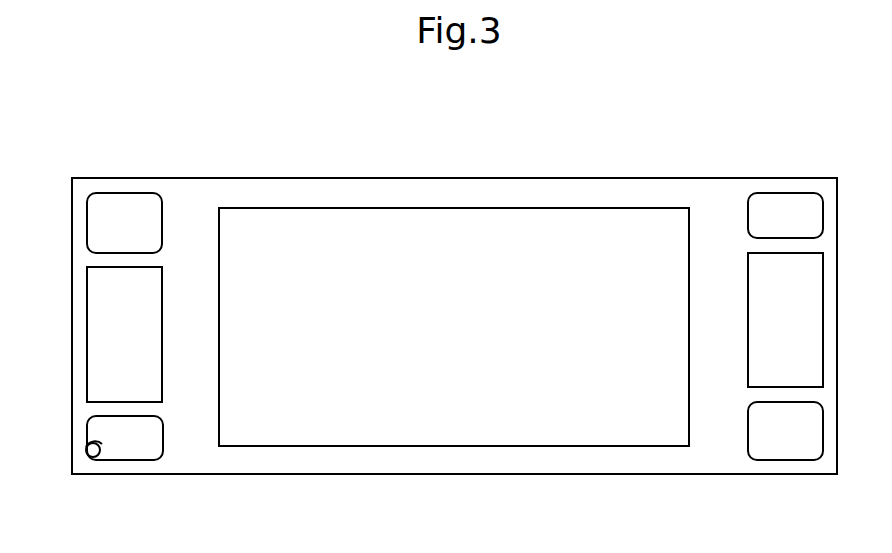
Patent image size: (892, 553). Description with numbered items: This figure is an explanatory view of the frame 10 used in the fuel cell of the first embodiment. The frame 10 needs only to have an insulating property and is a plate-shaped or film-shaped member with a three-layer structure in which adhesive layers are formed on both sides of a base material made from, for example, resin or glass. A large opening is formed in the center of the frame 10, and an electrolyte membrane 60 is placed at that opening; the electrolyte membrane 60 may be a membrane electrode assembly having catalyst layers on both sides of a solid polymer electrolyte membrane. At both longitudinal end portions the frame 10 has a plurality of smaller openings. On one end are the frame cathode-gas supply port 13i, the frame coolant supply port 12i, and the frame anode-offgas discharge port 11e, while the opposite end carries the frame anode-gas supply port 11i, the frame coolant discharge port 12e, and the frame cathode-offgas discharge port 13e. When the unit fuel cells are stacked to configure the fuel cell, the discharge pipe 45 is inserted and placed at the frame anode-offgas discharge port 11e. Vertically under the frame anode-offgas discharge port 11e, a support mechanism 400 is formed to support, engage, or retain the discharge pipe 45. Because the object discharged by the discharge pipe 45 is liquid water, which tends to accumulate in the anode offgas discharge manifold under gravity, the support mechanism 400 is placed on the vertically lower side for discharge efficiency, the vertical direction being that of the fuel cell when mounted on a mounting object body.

The frame 10 is at (466, 178).
The electrolyte membrane 60 is at (467, 337).
The frame cathode-gas supply port 13i is at (106, 236).
The frame coolant supply port 12i is at (107, 343).
The frame anode-offgas discharge port 11e is at (115, 447).
The frame anode-gas supply port 11i is at (767, 227).
The frame coolant discharge port 12e is at (767, 331).
The frame cathode-offgas discharge port 13e is at (765, 443).
The discharge pipe 45 is at (100, 452).
The support mechanism 400 is at (100, 442).